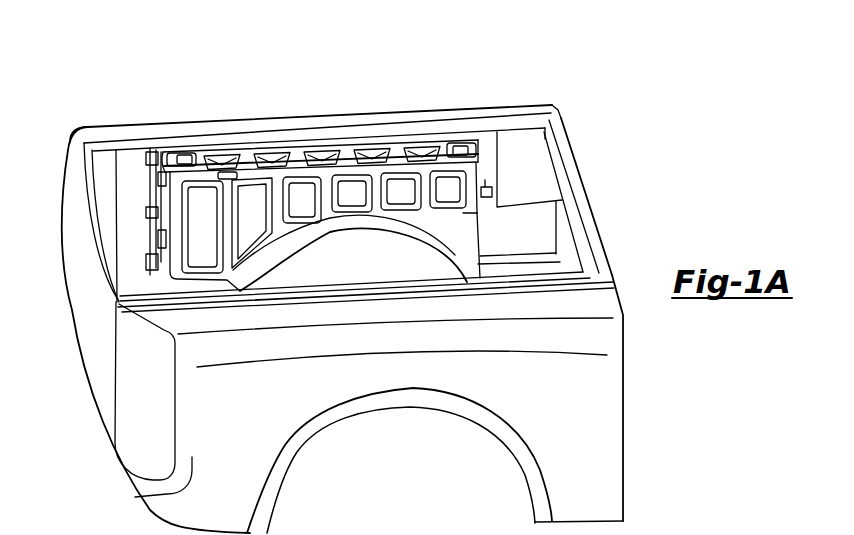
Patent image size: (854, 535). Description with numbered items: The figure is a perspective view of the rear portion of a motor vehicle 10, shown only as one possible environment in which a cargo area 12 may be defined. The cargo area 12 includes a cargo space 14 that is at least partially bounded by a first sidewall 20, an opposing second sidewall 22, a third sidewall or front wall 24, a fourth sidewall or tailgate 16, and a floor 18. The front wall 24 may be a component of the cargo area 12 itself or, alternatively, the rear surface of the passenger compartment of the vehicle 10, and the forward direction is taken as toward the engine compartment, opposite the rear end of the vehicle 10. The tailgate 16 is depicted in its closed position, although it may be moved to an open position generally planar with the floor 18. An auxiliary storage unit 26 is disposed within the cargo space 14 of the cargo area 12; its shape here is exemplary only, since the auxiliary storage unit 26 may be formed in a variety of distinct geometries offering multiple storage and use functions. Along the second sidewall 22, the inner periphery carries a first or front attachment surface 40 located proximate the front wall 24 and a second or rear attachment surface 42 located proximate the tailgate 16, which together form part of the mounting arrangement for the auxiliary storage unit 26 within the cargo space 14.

The motor vehicle 10 is at (607, 131).
The cargo area 12 is at (637, 496).
The cargo space 14 is at (522, 243).
The tailgate 16 is at (97, 347).
The floor 18 is at (143, 286).
The first sidewall 20 is at (153, 131).
The second sidewall 22 is at (368, 290).
The front wall 24 is at (574, 188).
The auxiliary storage unit 26 is at (247, 156).
The front attachment surface 40 is at (590, 385).
The rear attachment surface 42 is at (130, 491).